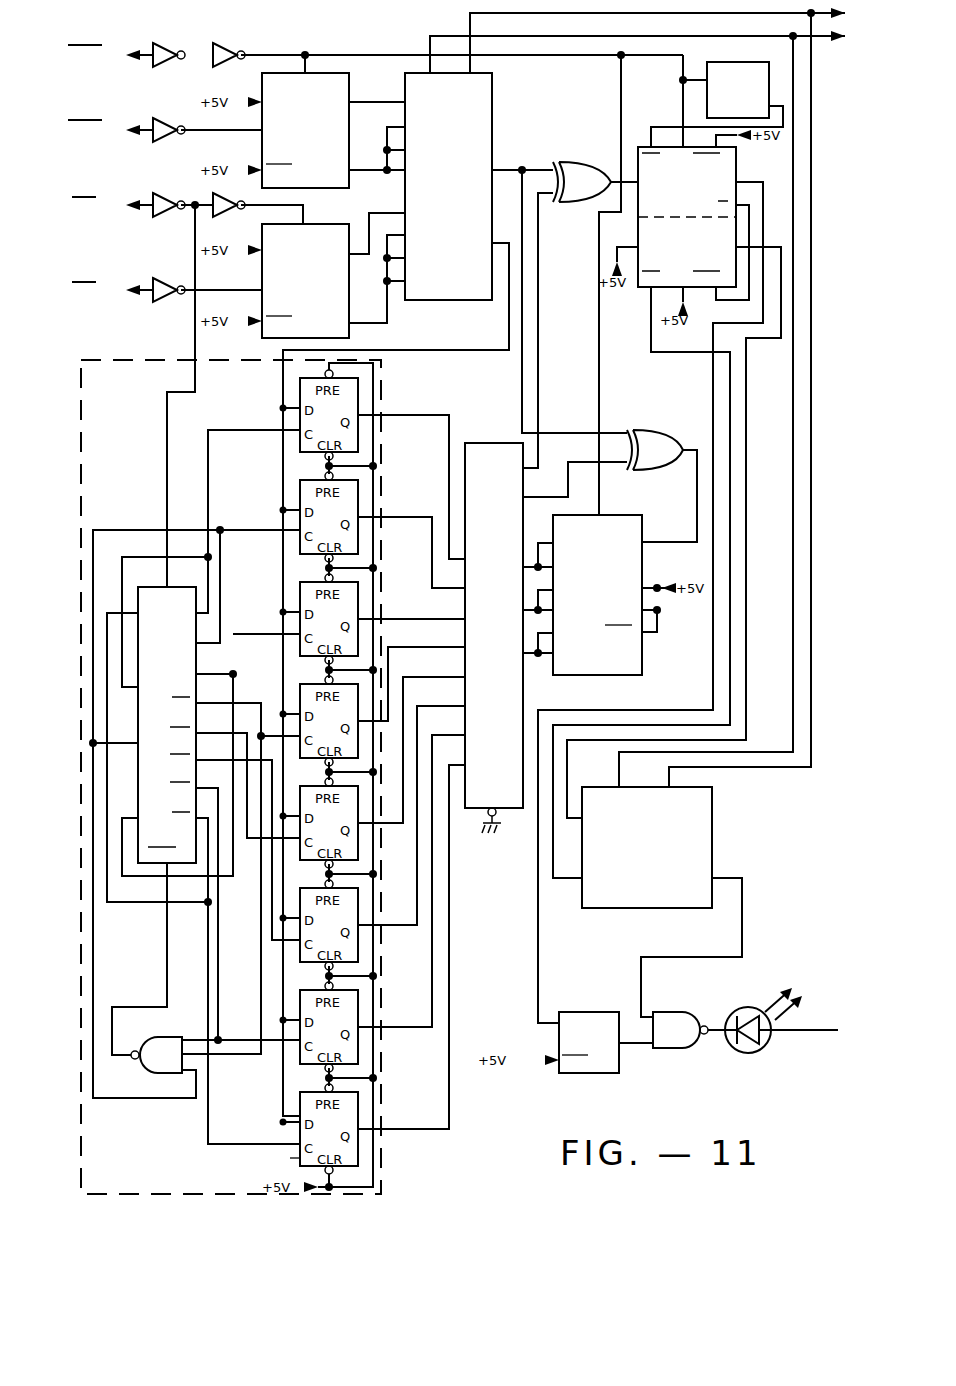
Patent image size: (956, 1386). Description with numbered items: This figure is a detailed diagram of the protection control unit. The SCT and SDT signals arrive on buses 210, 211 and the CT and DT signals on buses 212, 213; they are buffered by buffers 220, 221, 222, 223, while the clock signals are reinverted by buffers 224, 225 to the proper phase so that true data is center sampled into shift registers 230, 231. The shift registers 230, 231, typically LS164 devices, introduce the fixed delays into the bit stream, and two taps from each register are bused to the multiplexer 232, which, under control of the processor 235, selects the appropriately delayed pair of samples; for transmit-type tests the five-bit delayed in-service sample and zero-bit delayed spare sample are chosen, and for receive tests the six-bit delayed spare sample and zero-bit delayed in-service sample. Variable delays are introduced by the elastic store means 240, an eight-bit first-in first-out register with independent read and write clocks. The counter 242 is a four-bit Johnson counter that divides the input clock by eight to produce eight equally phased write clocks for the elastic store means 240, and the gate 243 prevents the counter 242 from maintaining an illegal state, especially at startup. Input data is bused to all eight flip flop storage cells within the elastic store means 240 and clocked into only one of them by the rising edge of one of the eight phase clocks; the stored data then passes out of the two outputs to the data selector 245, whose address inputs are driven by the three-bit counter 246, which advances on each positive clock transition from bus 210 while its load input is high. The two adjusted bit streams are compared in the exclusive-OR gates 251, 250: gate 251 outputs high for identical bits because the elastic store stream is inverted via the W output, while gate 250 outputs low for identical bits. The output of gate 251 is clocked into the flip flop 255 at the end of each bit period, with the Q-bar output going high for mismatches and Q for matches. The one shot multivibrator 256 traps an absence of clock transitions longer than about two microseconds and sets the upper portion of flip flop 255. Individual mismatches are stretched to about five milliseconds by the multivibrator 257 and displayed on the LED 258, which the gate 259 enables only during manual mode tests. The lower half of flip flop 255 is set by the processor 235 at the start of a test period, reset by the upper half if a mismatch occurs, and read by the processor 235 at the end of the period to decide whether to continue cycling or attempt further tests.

The bus 210 is at (138, 50).
The bus 211 is at (136, 130).
The bus 212 is at (138, 205).
The bus 213 is at (136, 290).
The buffer 220 is at (160, 44).
The buffer 221 is at (160, 119).
The buffer 222 is at (154, 196).
The buffer 223 is at (176, 258).
The buffer 224 is at (226, 45).
The buffer 225 is at (220, 196).
The shift register 230 is at (340, 82).
The shift register 231 is at (328, 226).
The multiplexer 232 is at (490, 120).
The processor 235 is at (710, 830).
The elastic store means 240 is at (160, 360).
The counter 242 is at (136, 592).
The gate 243 is at (170, 1036).
The data selector 245 is at (498, 434).
The counter 246 is at (606, 676).
The exclusive-OR gate 250 is at (586, 172).
The exclusive-OR gate 251 is at (664, 440).
The flip flop 255 is at (742, 174).
The one shot multivibrator 256 is at (769, 52).
The multivibrator 257 is at (596, 1076).
The LED 258 is at (754, 1046).
The gate 259 is at (696, 1003).